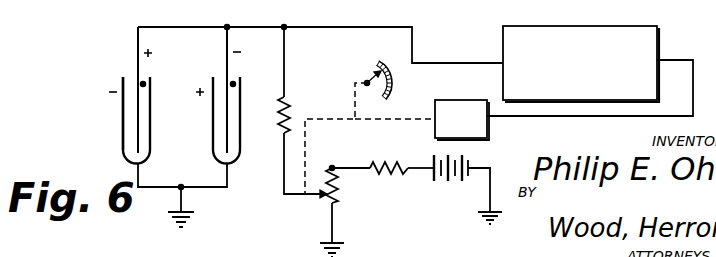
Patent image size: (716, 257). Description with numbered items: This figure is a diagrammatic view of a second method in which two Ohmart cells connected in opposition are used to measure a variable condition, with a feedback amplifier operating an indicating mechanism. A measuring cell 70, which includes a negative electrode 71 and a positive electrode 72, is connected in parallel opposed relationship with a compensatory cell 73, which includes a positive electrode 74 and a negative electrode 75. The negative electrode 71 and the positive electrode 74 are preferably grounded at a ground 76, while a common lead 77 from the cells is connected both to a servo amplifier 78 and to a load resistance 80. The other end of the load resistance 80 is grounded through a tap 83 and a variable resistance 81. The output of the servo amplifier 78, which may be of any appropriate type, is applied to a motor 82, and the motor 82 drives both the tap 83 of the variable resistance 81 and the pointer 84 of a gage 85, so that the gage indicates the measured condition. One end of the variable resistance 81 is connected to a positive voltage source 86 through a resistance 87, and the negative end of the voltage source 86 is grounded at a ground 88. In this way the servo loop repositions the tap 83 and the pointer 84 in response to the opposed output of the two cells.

The measuring cell 70 is at (122, 126).
The negative electrode 71 is at (123, 78).
The positive electrode 72 is at (138, 39).
The compensatory cell 73 is at (212, 153).
The positive electrode 74 is at (240, 84).
The negative electrode 75 is at (229, 40).
The ground 76 is at (182, 202).
The common lead 77 is at (284, 25).
The servo amplifier 78 is at (658, 36).
The load resistance 80 is at (290, 100).
The variable resistance 81 is at (338, 195).
The motor 82 is at (453, 100).
The tap 83 is at (297, 195).
The pointer 84 is at (373, 70).
The gage 85 is at (394, 84).
The positive voltage source 86 is at (432, 176).
The resistance 87 is at (398, 175).
The ground 88 is at (490, 186).